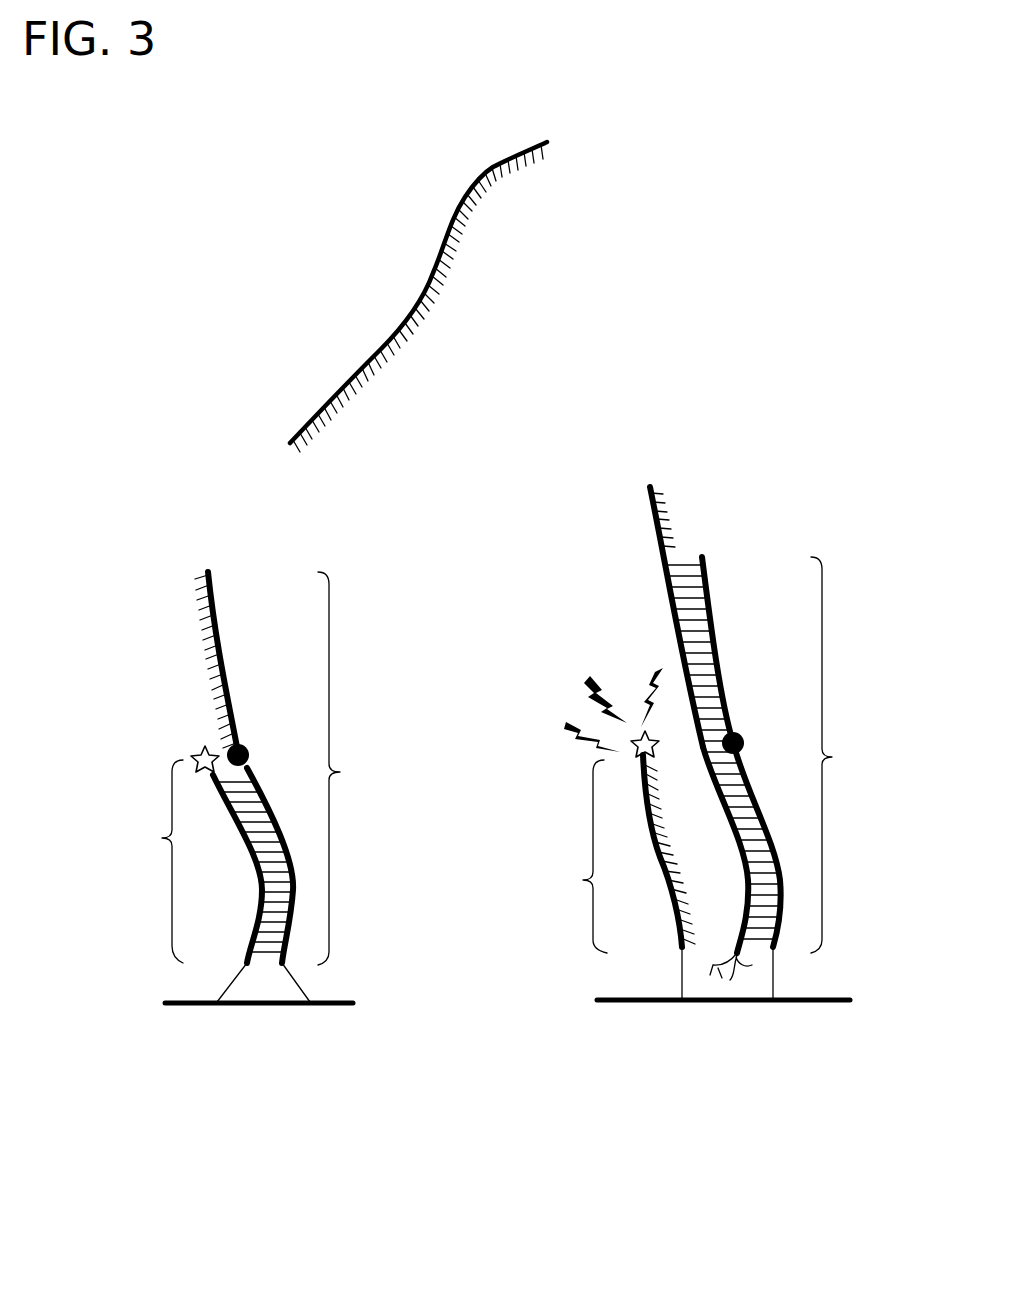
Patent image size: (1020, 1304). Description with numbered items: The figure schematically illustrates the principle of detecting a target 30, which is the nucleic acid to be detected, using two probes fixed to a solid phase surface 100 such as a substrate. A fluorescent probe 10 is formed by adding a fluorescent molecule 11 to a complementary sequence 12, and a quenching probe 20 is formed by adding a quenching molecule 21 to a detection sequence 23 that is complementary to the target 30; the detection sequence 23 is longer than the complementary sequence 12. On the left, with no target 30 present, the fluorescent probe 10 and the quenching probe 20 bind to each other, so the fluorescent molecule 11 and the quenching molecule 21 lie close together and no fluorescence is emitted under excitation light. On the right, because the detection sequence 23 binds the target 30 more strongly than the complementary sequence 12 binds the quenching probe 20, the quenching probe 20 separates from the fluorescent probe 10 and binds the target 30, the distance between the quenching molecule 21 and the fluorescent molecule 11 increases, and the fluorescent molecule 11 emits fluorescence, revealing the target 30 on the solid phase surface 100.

The fluorescent probe 10 is at (234, 832).
The fluorescent molecule 11 is at (190, 757).
The complementary sequence 12 is at (364, 861).
The quenching probe 20 is at (299, 876).
The quenching molecule 21 is at (250, 755).
The detection sequence 23 is at (595, 761).
The target 30 is at (432, 273).
The solid phase surface 100 is at (293, 1005).